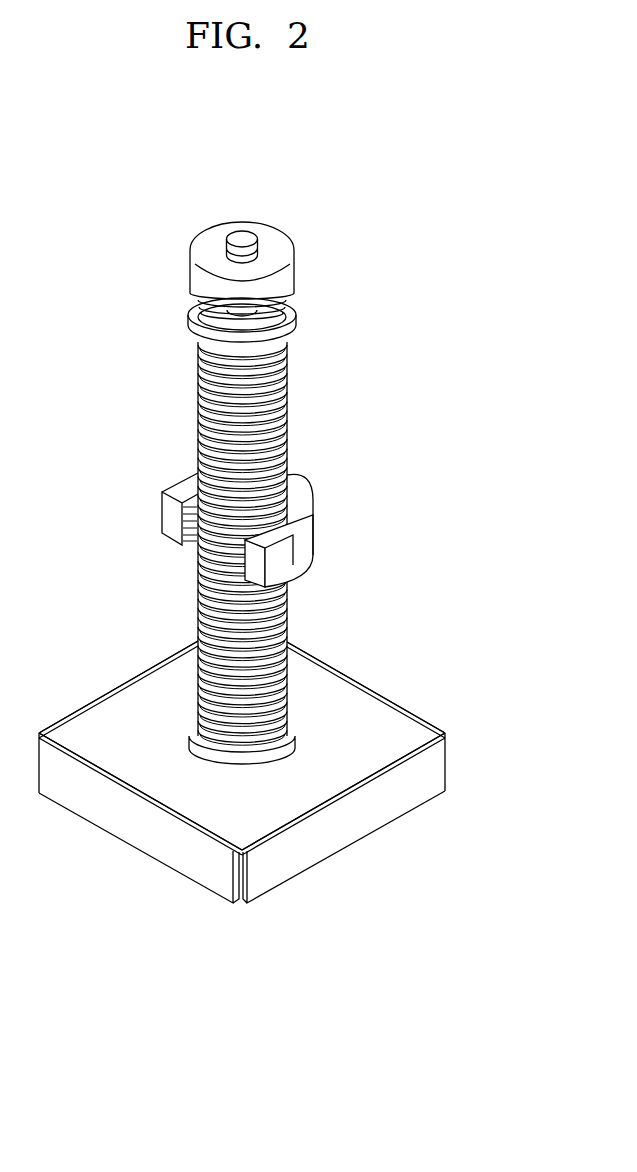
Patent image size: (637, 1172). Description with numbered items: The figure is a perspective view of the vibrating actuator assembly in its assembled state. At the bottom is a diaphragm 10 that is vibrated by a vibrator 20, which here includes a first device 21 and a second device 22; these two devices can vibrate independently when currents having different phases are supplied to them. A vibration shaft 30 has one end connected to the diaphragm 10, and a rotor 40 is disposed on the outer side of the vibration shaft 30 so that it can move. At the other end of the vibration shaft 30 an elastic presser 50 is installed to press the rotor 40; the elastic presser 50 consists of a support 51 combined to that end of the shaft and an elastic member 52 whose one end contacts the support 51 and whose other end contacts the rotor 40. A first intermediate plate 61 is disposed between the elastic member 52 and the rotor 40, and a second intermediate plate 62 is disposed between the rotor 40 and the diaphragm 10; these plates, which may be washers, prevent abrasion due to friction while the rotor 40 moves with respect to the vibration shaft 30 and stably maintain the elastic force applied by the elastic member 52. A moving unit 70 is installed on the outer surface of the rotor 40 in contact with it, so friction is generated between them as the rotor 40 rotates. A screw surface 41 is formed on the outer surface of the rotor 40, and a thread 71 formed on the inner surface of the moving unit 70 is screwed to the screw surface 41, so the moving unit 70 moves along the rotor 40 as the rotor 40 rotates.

The diaphragm 10 is at (357, 732).
The vibrator 20 is at (242, 824).
The first device 21 is at (205, 882).
The second device 22 is at (282, 875).
The vibration shaft 30 is at (258, 238).
The rotor 40 is at (258, 543).
The screw surface 41 is at (203, 435).
The elastic presser 50 is at (310, 270).
The support 51 is at (287, 272).
The elastic member 52 is at (282, 306).
The first intermediate plate 61 is at (300, 327).
The second intermediate plate 62 is at (293, 726).
The moving unit 70 is at (250, 519).
The thread 71 is at (170, 537).